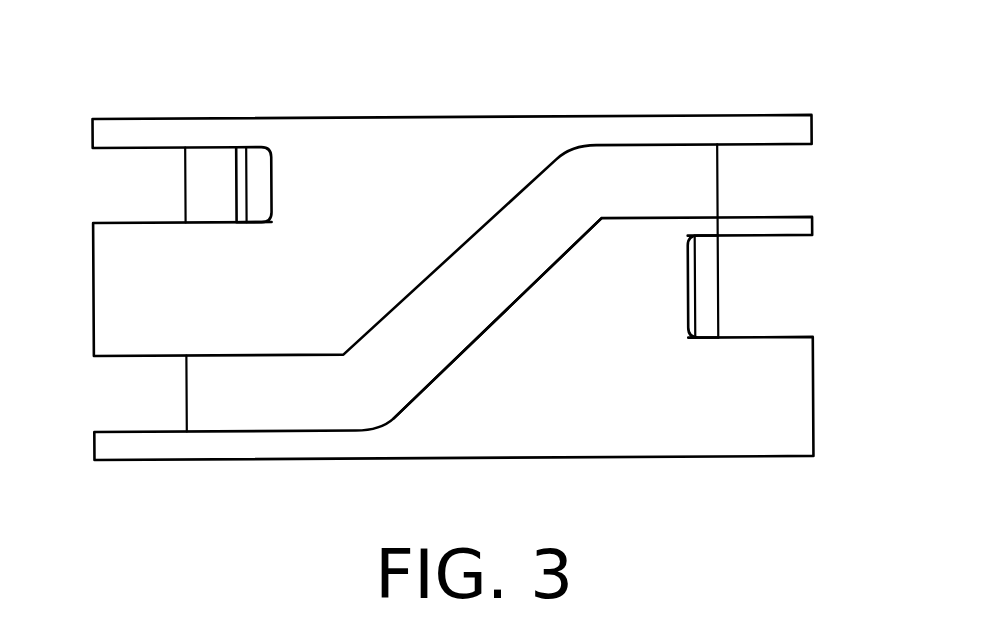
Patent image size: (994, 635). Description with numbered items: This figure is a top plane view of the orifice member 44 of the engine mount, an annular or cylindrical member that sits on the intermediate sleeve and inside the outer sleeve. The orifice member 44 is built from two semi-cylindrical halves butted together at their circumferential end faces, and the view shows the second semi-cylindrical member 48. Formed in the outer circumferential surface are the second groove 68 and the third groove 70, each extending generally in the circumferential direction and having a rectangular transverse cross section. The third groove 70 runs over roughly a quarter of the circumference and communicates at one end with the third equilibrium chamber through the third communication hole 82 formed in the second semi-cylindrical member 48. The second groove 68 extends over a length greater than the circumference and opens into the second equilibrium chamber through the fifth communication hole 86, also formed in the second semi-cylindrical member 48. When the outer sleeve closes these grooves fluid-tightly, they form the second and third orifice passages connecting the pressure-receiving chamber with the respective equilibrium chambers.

The orifice member 44 is at (587, 78).
The second semi-cylindrical member 48 is at (708, 432).
The second groove 68 is at (457, 355).
The third groove 70 is at (787, 237).
The third communication hole 82 is at (700, 290).
The fifth communication hole 86 is at (272, 182).